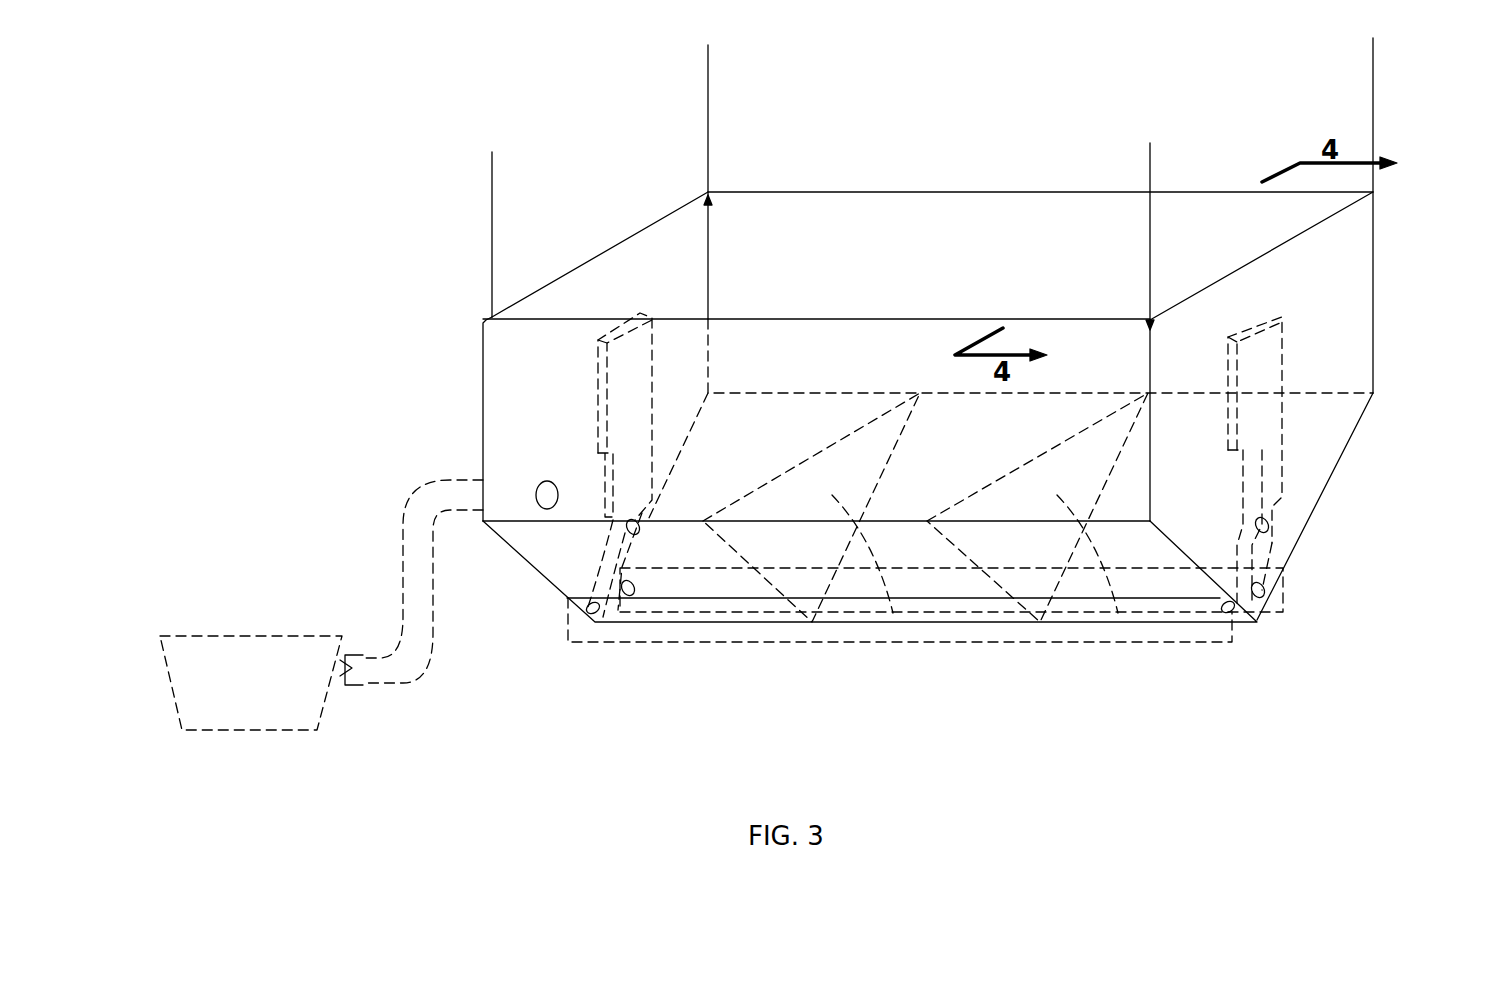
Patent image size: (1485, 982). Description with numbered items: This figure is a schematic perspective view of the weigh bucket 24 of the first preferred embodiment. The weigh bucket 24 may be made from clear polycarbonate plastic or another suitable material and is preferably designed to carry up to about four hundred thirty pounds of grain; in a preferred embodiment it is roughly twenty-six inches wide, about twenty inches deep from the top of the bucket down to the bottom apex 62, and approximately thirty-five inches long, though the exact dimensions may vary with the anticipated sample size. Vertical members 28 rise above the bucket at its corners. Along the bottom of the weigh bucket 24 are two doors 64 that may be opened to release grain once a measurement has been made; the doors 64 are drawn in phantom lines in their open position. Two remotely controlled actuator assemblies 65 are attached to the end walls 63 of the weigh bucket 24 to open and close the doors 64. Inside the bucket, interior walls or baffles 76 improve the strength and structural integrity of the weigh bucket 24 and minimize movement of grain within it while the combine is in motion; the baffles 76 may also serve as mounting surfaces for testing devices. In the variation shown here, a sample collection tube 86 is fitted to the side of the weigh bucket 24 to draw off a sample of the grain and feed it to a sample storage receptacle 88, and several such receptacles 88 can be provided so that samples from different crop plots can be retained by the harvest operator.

The weigh bucket 24 is at (930, 170).
The support posts 28 is at (492, 235).
The bottom apex 62 is at (1182, 622).
The end walls 63 is at (630, 250).
The doors 64 is at (590, 633).
The actuator assemblies 65 is at (600, 432).
The baffles 76 is at (893, 613).
The sample collection tube 86 is at (430, 583).
The sample storage receptacle 88 is at (312, 703).